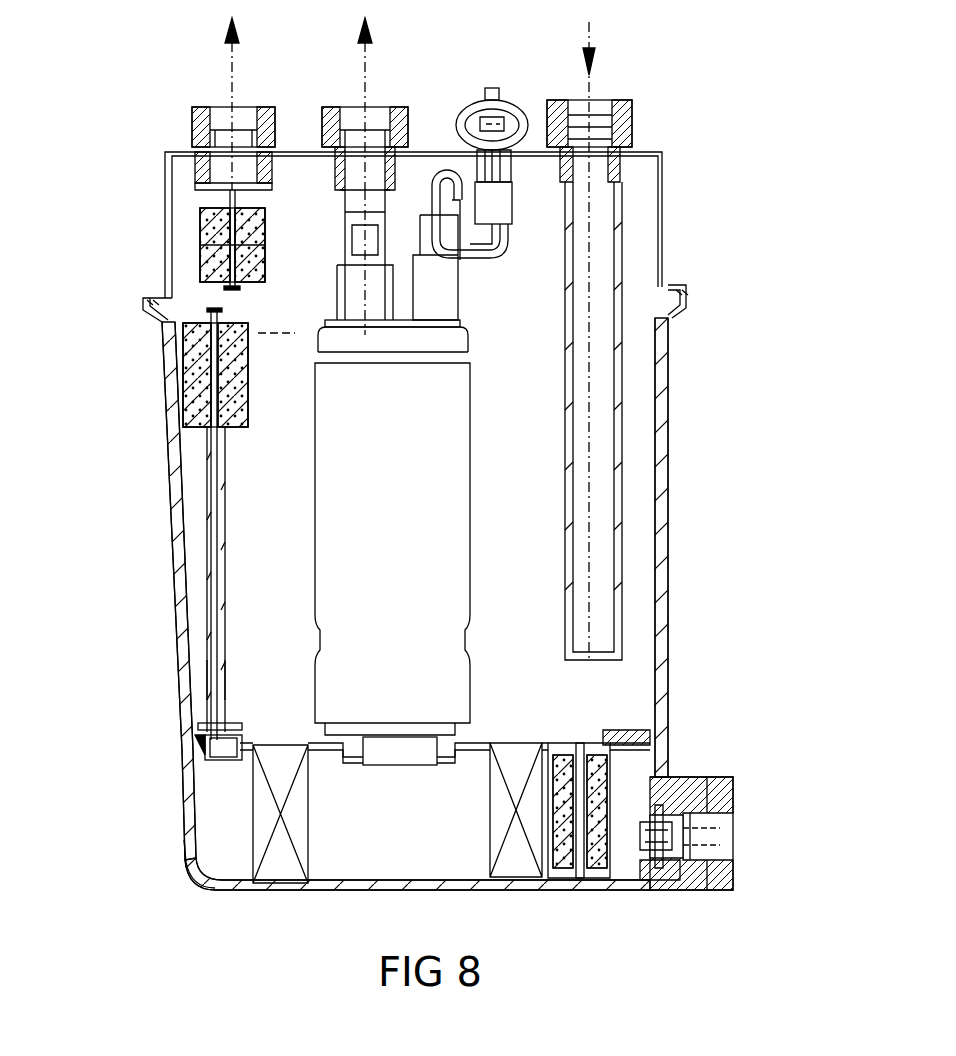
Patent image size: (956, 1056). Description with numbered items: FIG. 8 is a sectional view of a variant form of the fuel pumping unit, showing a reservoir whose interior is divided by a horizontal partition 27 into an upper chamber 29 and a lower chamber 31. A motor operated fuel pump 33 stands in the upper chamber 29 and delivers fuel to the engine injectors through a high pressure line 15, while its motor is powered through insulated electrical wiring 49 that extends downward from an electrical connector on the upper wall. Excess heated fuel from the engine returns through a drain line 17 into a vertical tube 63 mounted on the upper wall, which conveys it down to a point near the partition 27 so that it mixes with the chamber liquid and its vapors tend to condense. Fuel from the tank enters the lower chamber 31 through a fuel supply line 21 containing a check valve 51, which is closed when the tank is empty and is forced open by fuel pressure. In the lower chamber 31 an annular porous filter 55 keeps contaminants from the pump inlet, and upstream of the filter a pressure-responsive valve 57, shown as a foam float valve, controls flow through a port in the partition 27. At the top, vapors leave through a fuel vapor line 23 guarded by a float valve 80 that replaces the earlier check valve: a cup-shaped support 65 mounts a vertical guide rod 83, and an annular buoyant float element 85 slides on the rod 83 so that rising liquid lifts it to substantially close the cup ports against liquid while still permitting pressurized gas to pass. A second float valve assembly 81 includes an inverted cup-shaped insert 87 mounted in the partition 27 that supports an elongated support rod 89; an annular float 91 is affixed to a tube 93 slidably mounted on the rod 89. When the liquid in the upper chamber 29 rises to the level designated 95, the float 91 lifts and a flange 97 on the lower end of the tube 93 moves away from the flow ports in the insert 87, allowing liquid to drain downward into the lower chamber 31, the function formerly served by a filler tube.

The high pressure line 15 is at (368, 72).
The drain line 17 is at (592, 32).
The fuel supply line 21 is at (742, 836).
The fuel vapor line 23 is at (232, 64).
The horizontal partition 27 is at (518, 743).
The upper chamber 29 is at (640, 402).
The lower chamber 31 is at (225, 855).
The motor operated fuel pump 33 is at (471, 515).
The insulated electrical wiring 49 is at (495, 258).
The check valve 51 is at (657, 865).
The annular porous filter 55 is at (520, 880).
The pressure-responsive valve 57 is at (610, 778).
The vertical tube 63 is at (622, 515).
The cup-shaped support 65 is at (198, 178).
The float valve 80 is at (200, 222).
The float valve assembly 81 is at (208, 678).
The vertical guide rod 83 is at (238, 200).
The annular buoyant float element 85 is at (200, 258).
The inverted cup-shaped insert 87 is at (212, 760).
The elongated support rod 89 is at (210, 314).
The annular float 91 is at (185, 405).
The tube 93 is at (225, 483).
The liquid level 95 is at (268, 333).
The flange 97 is at (198, 727).